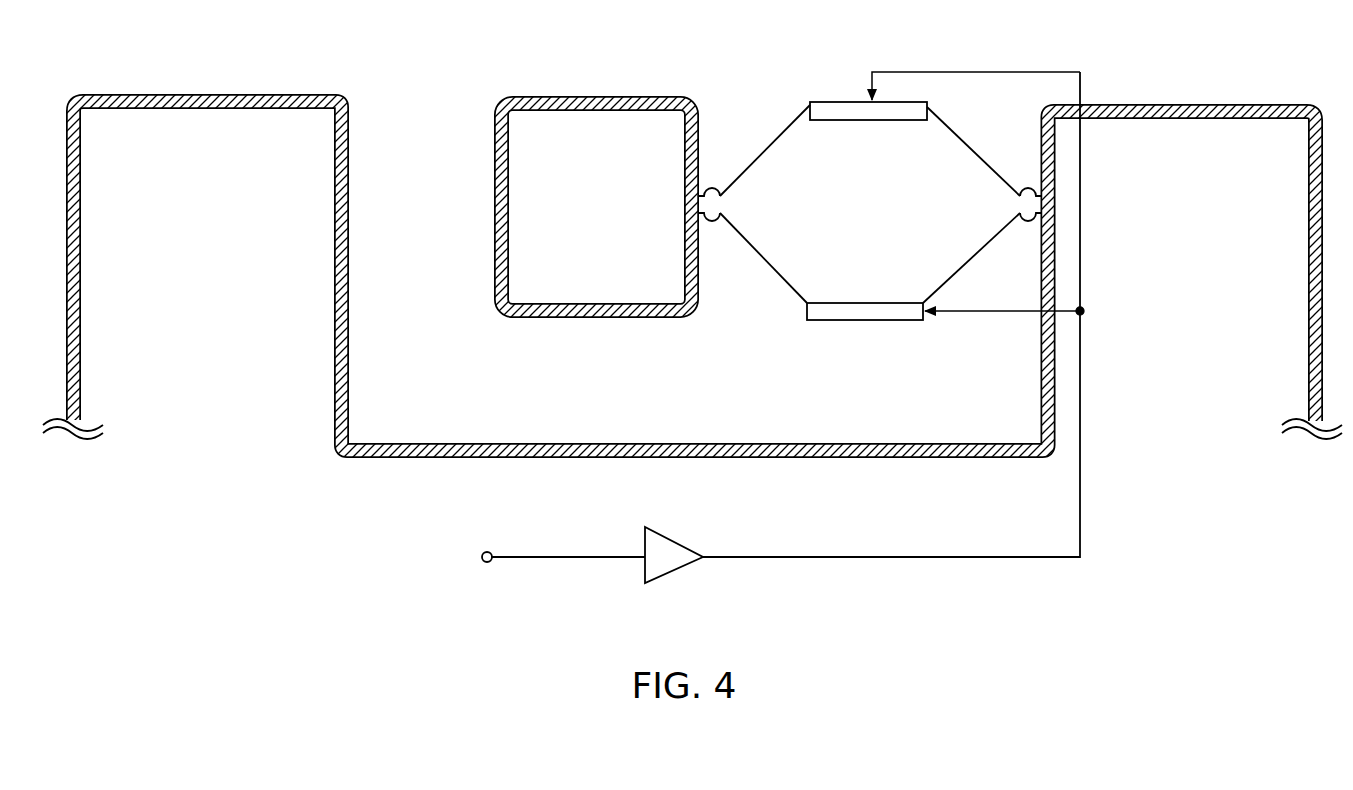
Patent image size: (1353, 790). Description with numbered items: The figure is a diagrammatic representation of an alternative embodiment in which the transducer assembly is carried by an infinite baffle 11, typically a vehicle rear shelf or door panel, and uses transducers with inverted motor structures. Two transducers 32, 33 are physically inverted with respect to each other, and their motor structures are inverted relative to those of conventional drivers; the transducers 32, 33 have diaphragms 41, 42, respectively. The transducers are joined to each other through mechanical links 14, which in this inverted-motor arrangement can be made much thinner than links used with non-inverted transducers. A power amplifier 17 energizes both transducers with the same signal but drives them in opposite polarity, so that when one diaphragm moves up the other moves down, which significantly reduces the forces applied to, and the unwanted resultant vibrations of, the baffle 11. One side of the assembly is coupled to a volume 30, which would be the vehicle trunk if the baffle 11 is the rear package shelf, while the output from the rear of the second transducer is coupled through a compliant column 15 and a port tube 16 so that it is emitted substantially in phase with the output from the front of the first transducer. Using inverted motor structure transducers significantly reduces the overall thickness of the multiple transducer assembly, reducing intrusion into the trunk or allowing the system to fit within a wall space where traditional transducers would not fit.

The infinite baffle 11 is at (223, 95).
The mechanical link 14 is at (692, 204).
The compliant column 15 is at (780, 418).
The port tube 16 is at (395, 226).
The power amplifier 17 is at (671, 533).
The volume 30 is at (1204, 460).
The transducer 32 is at (825, 100).
The transducer 33 is at (858, 302).
The diaphragm 41 is at (968, 156).
The diaphragm 42 is at (972, 258).